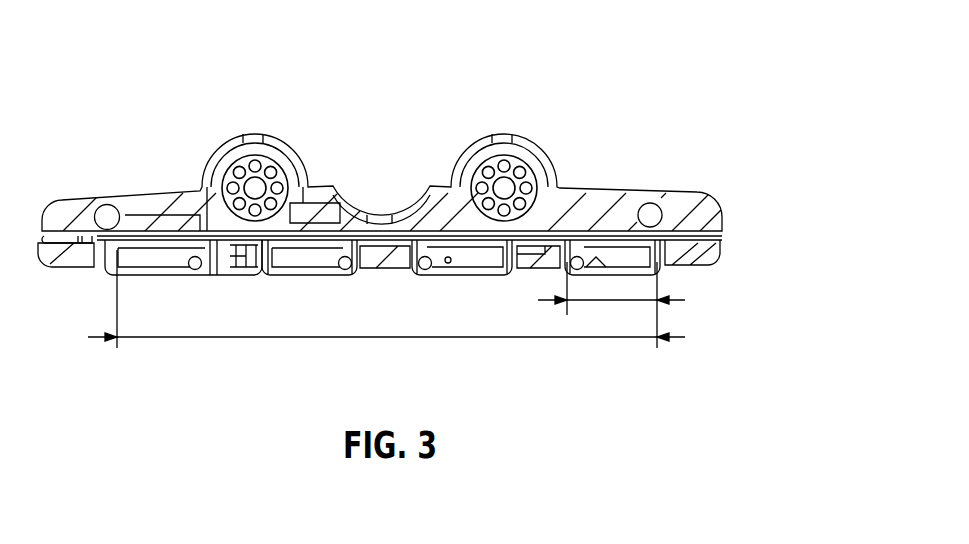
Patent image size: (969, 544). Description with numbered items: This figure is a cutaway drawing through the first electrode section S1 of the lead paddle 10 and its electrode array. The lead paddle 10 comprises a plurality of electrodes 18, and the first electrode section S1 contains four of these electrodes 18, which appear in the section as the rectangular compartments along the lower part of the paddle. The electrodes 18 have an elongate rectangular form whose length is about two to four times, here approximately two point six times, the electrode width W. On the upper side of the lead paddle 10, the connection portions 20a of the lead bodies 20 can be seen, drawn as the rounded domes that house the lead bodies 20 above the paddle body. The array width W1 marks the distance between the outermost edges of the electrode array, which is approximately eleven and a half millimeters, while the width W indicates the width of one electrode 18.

The lead paddle 10 is at (73, 175).
The electrodes 18 is at (153, 250).
The lead bodies 20 is at (227, 170).
The connection portions 20a is at (230, 138).
The first electrode section S1 is at (62, 300).
The width W is at (625, 300).
The width between outermost edges of the electrode array W1 is at (404, 337).